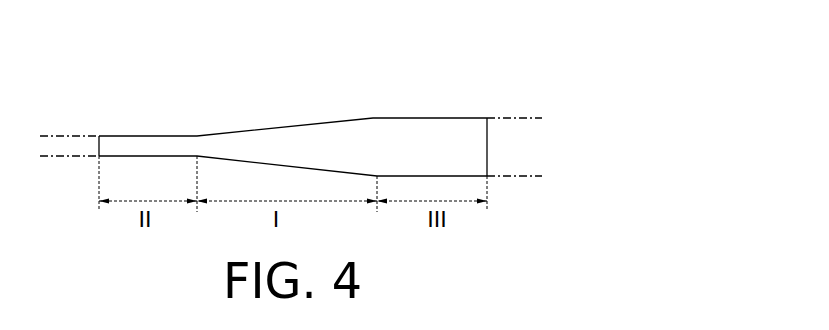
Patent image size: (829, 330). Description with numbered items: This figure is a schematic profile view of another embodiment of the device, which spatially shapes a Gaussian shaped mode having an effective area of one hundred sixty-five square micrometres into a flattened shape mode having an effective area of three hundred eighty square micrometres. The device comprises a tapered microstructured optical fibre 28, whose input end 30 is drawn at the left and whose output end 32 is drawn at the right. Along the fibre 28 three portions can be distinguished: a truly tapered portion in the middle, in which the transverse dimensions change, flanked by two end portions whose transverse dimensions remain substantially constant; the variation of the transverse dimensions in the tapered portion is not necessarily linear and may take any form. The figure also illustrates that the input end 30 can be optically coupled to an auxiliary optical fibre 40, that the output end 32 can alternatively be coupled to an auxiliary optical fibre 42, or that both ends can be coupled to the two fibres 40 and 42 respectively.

The tapered microstructured optical fibre 28 is at (303, 125).
The input end 30 is at (114, 136).
The output end 32 is at (473, 118).
The auxiliary optical fibre 40 is at (70, 136).
The auxiliary optical fibre 42 is at (513, 118).